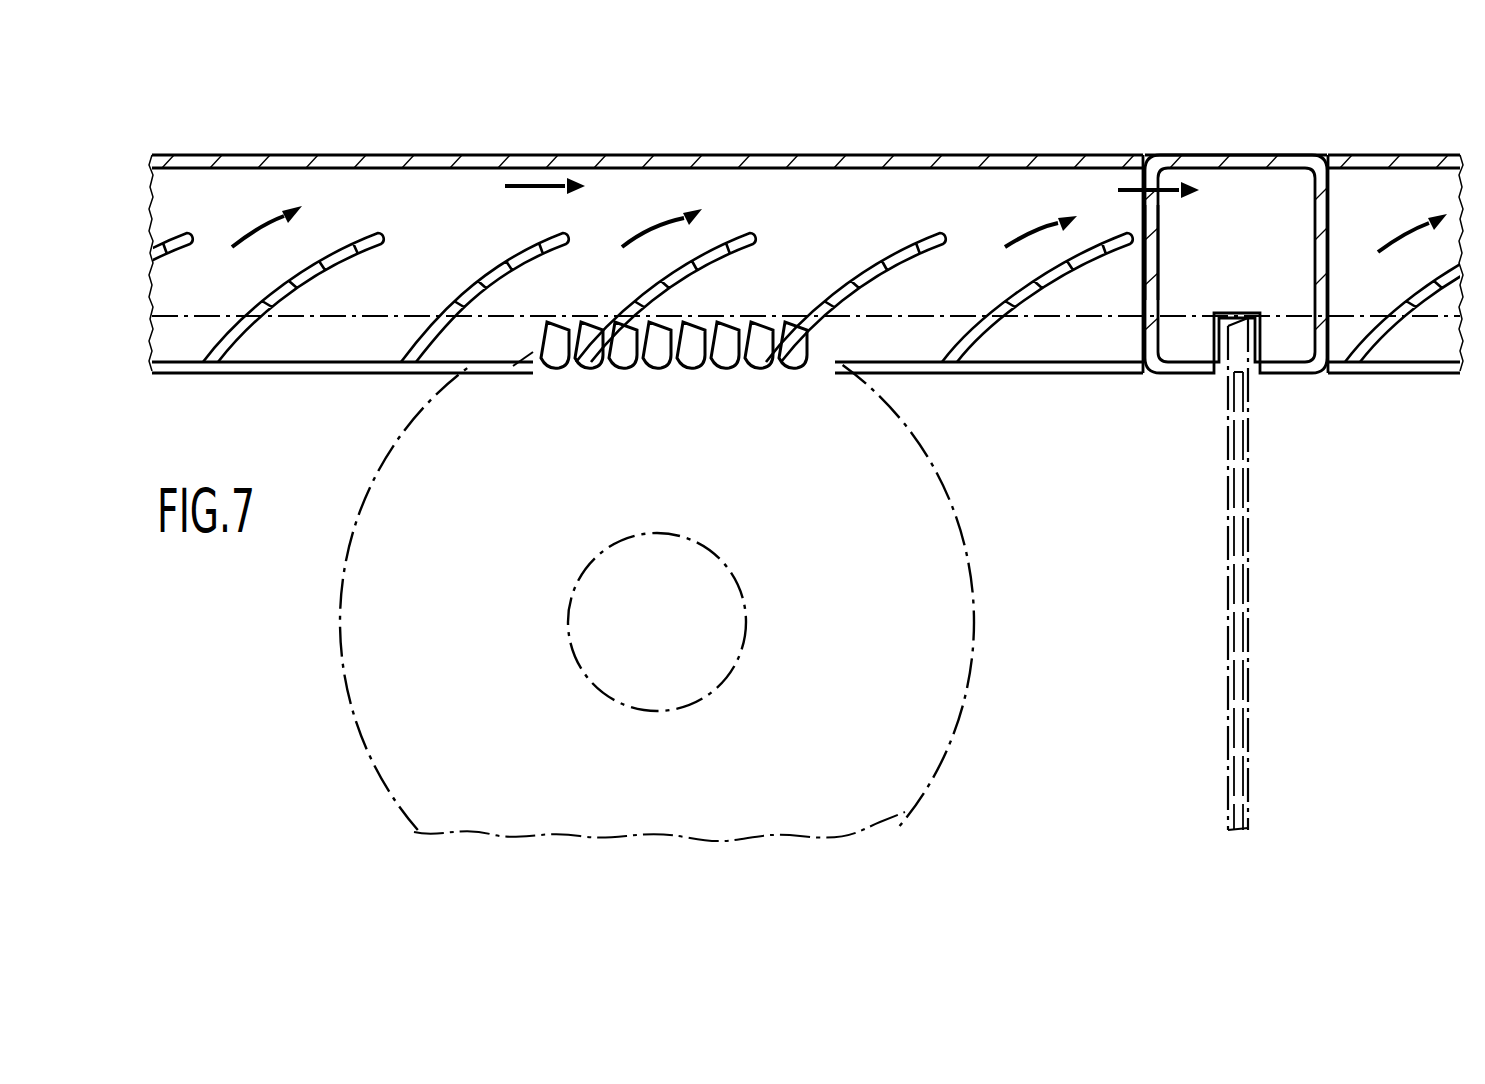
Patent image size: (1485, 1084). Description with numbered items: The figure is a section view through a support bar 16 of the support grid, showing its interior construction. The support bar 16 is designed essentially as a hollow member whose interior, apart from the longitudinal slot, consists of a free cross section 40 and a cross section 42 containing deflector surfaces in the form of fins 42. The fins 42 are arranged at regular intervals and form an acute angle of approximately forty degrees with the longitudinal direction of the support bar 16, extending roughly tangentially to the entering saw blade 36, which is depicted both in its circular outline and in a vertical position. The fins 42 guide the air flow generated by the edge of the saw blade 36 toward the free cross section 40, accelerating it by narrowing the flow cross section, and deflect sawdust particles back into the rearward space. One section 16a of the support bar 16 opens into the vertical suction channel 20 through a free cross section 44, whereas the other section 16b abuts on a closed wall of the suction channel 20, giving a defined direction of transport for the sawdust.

The support bar 16 is at (698, 146).
The section of support bar 16a is at (1060, 155).
The section of support bar 16b is at (1375, 153).
The suction channel 20 is at (1222, 153).
The circular saw blade 36 is at (968, 589).
The free cross section 40 is at (488, 178).
The fins 42 is at (374, 230).
The free cross section 44 is at (1160, 217).